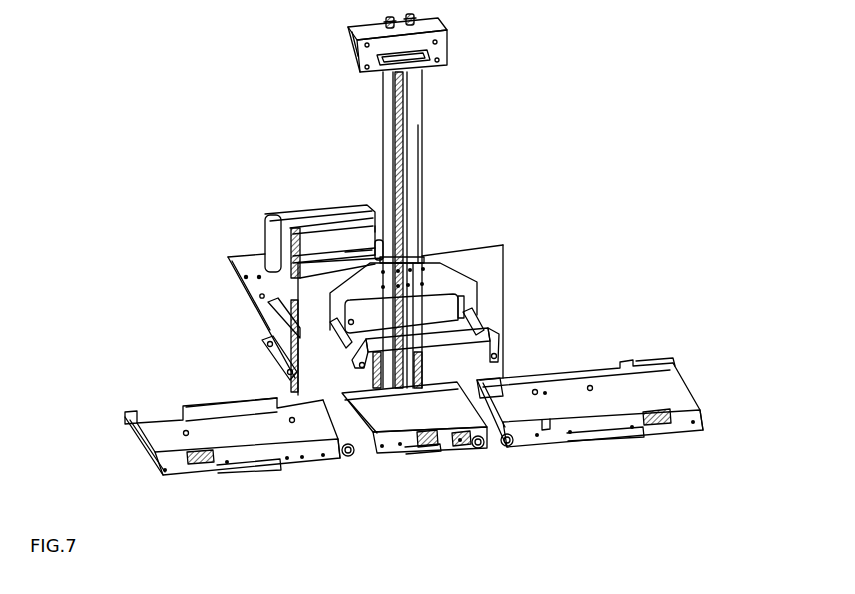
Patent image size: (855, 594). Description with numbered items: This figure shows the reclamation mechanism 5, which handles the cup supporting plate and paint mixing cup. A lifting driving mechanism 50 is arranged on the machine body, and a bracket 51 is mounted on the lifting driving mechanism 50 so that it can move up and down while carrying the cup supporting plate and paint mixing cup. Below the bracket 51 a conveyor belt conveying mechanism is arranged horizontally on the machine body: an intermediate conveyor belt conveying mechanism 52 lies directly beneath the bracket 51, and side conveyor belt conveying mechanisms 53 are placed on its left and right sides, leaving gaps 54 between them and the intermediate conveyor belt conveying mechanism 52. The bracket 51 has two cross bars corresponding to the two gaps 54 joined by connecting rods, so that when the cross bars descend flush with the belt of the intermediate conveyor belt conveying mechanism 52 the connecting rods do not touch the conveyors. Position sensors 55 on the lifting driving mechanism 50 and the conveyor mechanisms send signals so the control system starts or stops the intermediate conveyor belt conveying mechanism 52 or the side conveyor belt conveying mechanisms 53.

The reclamation mechanism 5 is at (310, 285).
The lifting driving mechanism 50 is at (418, 158).
The bracket 51 is at (475, 318).
The intermediate conveyor belt conveying mechanism 52 is at (462, 436).
The side conveyor belt conveying mechanism 53 is at (238, 433).
The gap 54 is at (327, 407).
The position sensor 55 is at (200, 452).